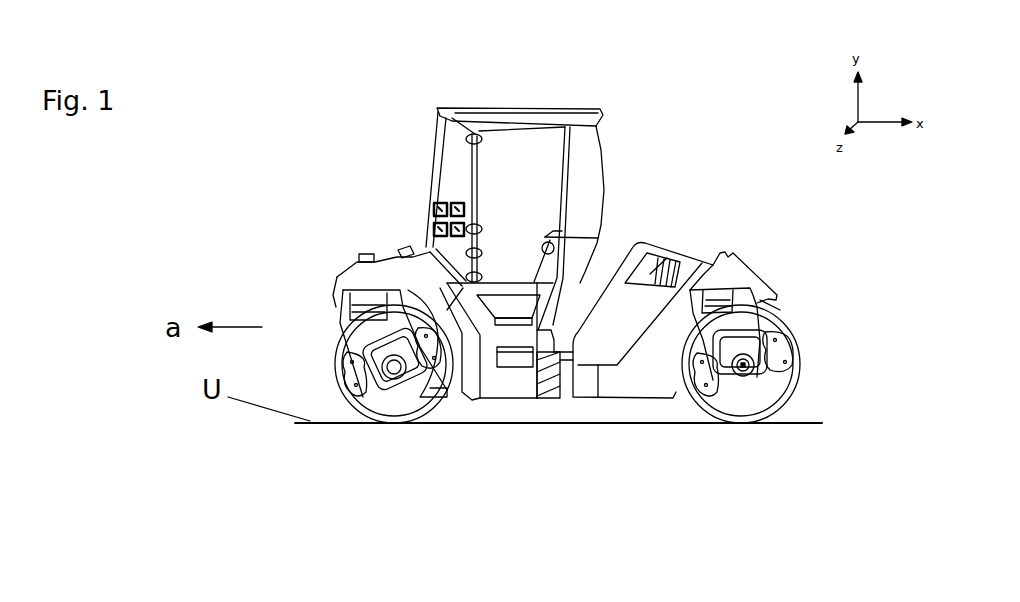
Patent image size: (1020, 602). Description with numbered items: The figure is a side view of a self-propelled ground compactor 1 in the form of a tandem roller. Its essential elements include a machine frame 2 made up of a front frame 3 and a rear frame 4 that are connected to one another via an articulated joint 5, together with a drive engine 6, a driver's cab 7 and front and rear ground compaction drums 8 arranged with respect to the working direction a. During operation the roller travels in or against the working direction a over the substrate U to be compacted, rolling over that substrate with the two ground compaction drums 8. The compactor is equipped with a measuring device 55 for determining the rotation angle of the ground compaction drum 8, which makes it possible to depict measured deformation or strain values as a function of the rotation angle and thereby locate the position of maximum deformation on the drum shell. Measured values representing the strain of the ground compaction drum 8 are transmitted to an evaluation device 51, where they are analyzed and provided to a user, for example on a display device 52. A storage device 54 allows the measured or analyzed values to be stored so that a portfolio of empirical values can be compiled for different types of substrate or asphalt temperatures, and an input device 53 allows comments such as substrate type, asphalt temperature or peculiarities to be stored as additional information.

The ground compactor 1 is at (691, 73).
The machine frame 2 is at (610, 378).
The front frame 3 is at (500, 394).
The rear frame 4 is at (730, 270).
The articulated joint 5 is at (553, 377).
The drive engine 6 is at (667, 258).
The driver's cab 7 is at (449, 151).
The ground compaction drum 8 is at (383, 407).
The evaluation device 51 is at (464, 222).
The display device 52 is at (449, 203).
The input device 53 is at (433, 231).
The storage device 54 is at (433, 206).
The measuring device 55 is at (743, 372).